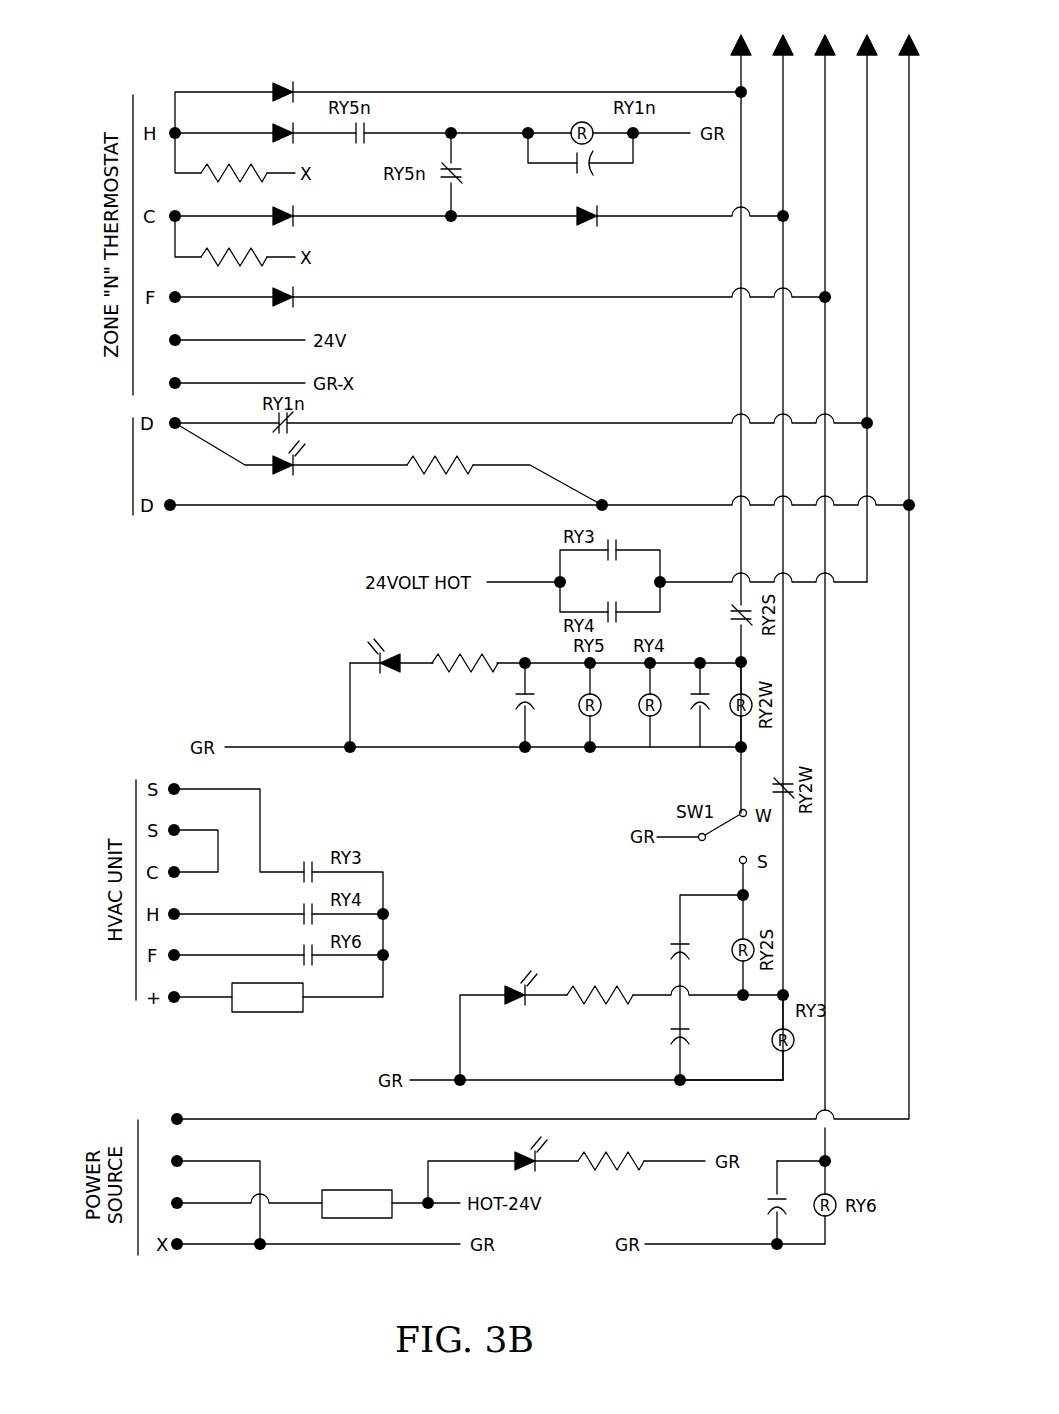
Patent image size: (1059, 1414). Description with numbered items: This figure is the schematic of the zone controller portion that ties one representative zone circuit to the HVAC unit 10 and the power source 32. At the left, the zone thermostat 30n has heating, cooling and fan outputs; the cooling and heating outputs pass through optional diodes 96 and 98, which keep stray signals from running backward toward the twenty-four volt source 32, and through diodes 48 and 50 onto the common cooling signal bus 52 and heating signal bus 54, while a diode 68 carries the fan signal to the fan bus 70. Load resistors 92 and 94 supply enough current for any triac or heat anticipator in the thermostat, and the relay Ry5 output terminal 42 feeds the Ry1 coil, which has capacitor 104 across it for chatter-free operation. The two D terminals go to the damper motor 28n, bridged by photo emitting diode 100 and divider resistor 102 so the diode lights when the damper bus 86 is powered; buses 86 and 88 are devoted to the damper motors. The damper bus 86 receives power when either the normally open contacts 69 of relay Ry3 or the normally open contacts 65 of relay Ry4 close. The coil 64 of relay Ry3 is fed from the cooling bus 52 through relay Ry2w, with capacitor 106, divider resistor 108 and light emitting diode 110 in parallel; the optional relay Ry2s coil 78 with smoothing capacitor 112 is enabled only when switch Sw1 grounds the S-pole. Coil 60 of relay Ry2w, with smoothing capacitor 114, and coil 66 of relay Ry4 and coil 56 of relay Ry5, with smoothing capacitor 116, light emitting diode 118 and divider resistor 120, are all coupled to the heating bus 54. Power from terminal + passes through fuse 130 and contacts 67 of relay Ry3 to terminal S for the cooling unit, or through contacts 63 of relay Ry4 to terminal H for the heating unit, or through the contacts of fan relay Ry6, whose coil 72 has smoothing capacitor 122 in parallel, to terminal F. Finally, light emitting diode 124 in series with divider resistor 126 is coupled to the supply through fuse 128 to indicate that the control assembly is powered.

The HVAC unit 10 is at (136, 785).
The damper motor 28n is at (133, 488).
The thermostat 30n is at (133, 108).
The 24-volt source 32 is at (140, 1122).
The output terminal 42 is at (452, 127).
The diode 48 is at (581, 207).
The diode 50 is at (285, 82).
The cooling signal bus 52 is at (775, 52).
The heating signal bus 54 is at (733, 52).
The coil of relay Ry5 56 is at (602, 708).
The coil of relay Ry2w 60 is at (752, 715).
The contacts of relay Ry4 63 is at (312, 904).
The coil of relay Ry3 64 is at (795, 1045).
The normally open contacts of relay Ry4 65 is at (625, 616).
The coil of relay Ry4 66 is at (662, 708).
The contacts of relay Ry3 67 is at (315, 860).
The diode 68 is at (287, 308).
The normally open contacts of relay Ry3 69 is at (608, 543).
The fan signal bus 70 is at (817, 52).
The coil of fan relay Ry6 72 is at (835, 1195).
The coil of relay Ry2s 78 is at (730, 957).
The damper motor bus 86 is at (859, 52).
The damper motor bus 88 is at (901, 52).
The load resistor 92 is at (260, 178).
The load resistor 94 is at (240, 262).
The diode 96 is at (284, 207).
The diode 98 is at (278, 125).
The photo emitting diode 100 is at (288, 474).
The voltage divider resistor 102 is at (450, 460).
The capacitor 104 is at (592, 170).
The capacitor 106 is at (668, 1034).
The voltage divider resistor 108 is at (607, 990).
The light emitting diode 110 is at (510, 990).
The smoothing capacitor 112 is at (668, 943).
The smoothing capacitor 114 is at (695, 710).
The smoothing capacitor 116 is at (518, 706).
The light emitting diode 118 is at (412, 640).
The divider resistor 120 is at (465, 656).
The smoothing capacitor 122 is at (765, 1203).
The light emitting diode 124 is at (527, 1152).
The voltage divider resistor 126 is at (608, 1155).
The fuse 128 is at (362, 1190).
The fuse 130 is at (245, 1013).